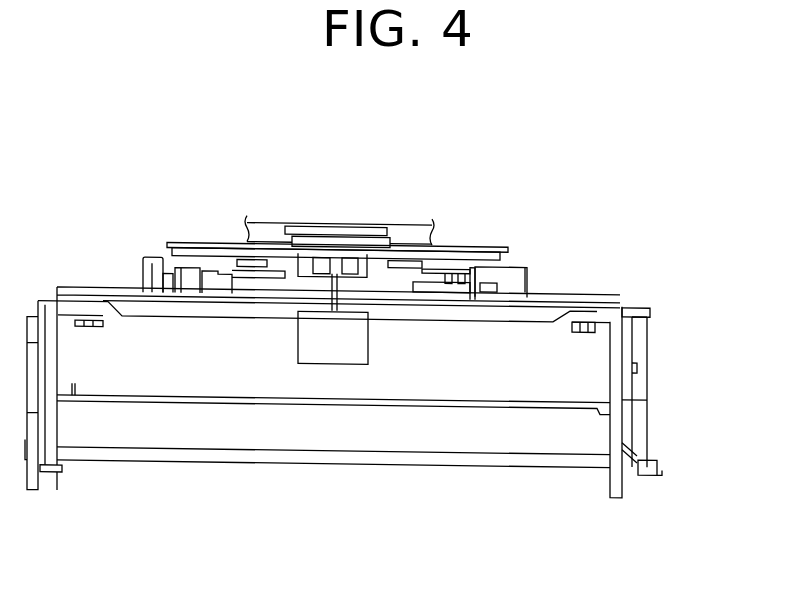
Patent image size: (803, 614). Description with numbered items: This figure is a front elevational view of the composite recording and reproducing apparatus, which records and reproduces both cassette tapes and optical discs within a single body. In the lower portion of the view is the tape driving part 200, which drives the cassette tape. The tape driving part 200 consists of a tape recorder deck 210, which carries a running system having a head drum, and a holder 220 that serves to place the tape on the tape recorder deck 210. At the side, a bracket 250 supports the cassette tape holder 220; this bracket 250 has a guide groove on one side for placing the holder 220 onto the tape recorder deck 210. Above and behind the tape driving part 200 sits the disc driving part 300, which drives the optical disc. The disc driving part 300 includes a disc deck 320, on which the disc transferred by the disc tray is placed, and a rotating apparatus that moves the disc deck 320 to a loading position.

The tape driving part 200 is at (317, 431).
The tape recorder deck 210 is at (357, 425).
The holder 220 is at (512, 410).
The bracket 250 is at (648, 400).
The disc driving part 300 is at (467, 233).
The disc deck 320 is at (525, 320).